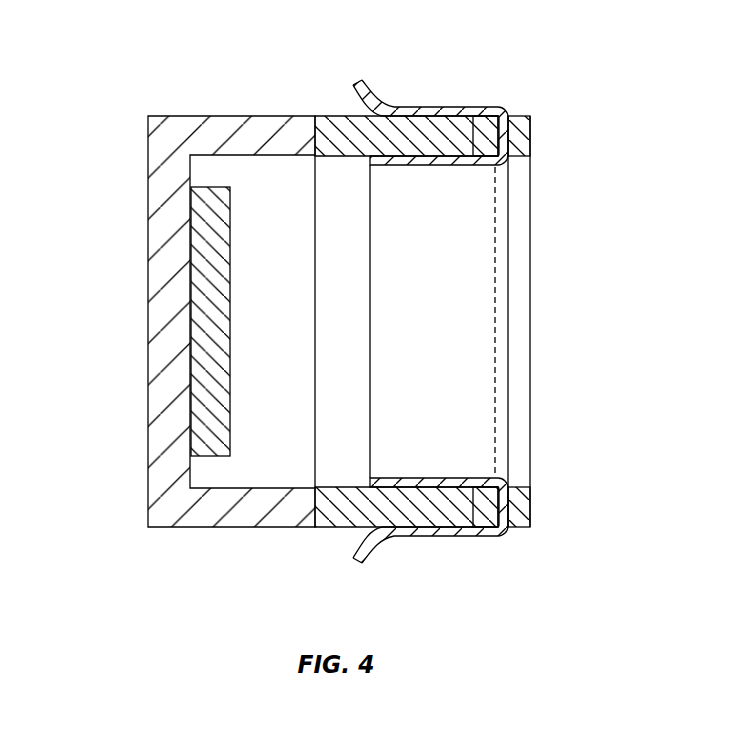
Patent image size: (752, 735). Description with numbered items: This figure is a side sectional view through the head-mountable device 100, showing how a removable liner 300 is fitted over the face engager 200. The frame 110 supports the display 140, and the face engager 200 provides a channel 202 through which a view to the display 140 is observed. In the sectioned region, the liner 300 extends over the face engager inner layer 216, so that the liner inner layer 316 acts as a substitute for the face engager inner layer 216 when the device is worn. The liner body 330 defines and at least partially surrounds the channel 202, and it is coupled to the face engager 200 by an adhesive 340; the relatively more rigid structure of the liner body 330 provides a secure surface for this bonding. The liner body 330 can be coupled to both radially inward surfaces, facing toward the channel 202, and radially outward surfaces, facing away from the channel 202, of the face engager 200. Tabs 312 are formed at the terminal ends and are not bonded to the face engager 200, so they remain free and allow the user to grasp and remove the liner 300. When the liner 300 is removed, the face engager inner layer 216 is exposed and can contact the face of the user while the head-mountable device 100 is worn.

The head-mountable device 100 is at (51, 96).
The frame 110 is at (155, 310).
The display 140 is at (216, 187).
The face engager 200 is at (461, 326).
The channel 202 is at (460, 316).
The face engager inner layer 216 is at (484, 125).
The liner 300 is at (460, 321).
The tab 312 is at (370, 82).
The liner inner layer 316 is at (531, 136).
The liner body 330 is at (465, 107).
The adhesive 340 is at (351, 89).